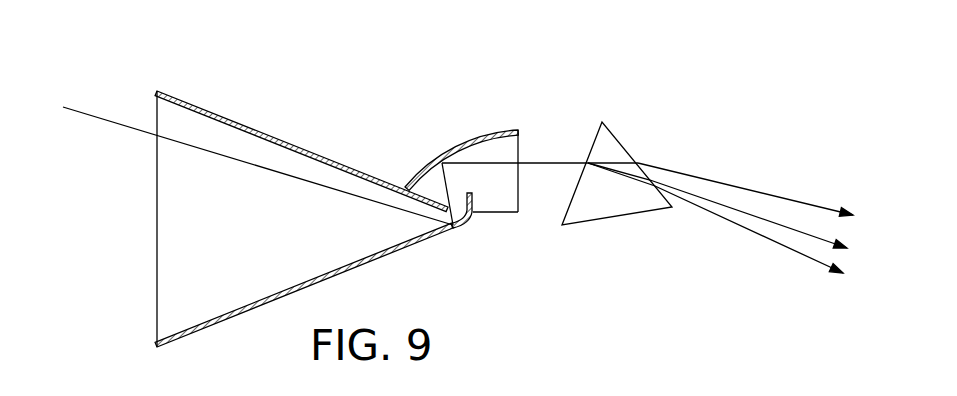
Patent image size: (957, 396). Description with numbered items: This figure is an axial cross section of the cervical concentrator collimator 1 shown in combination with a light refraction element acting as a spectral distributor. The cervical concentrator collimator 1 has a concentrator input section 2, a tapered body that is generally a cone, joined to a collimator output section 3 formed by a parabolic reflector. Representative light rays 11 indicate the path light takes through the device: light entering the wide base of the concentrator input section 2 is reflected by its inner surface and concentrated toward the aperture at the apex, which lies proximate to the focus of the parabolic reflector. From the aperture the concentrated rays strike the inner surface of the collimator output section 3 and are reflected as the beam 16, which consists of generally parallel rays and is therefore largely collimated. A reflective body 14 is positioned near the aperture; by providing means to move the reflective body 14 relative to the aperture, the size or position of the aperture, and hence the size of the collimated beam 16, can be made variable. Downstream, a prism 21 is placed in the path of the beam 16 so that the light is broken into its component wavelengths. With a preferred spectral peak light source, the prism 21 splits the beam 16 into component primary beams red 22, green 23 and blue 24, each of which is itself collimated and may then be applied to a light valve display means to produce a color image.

The cervical concentrator collimator 1 is at (397, 128).
The concentrator input section 2 is at (229, 118).
The collimator output section 3 is at (472, 136).
The light rays 11 is at (112, 121).
The reflective body 14 is at (465, 222).
The beam 16 is at (543, 148).
The prism 21 is at (615, 138).
The red beam 22 is at (762, 192).
The green beam 23 is at (790, 230).
The blue beam 24 is at (775, 244).